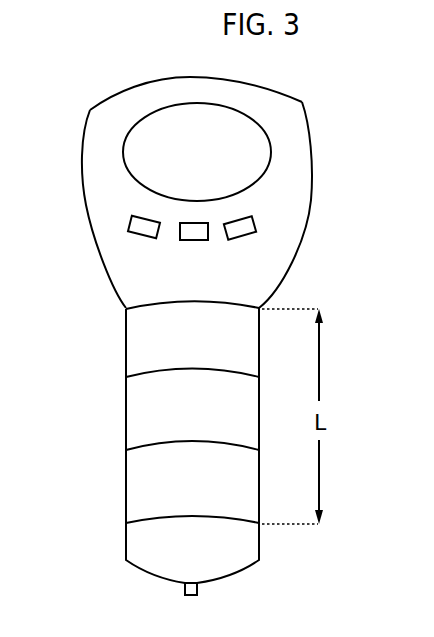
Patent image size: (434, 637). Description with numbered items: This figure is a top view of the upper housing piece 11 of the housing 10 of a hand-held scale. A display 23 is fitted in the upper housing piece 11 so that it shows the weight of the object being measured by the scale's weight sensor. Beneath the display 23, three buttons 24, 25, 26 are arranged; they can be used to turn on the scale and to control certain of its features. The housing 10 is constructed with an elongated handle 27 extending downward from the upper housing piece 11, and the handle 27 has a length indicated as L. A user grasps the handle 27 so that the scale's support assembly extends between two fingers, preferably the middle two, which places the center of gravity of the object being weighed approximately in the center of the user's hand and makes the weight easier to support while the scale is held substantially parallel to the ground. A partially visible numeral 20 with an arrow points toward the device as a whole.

The housing 10 is at (110, 98).
The upper housing piece 11 is at (290, 99).
The display 23 is at (238, 152).
The button 24 is at (146, 231).
The button 25 is at (192, 240).
The button 26 is at (237, 232).
The handle 27 is at (126, 479).
The device 20 is at (76, 573).